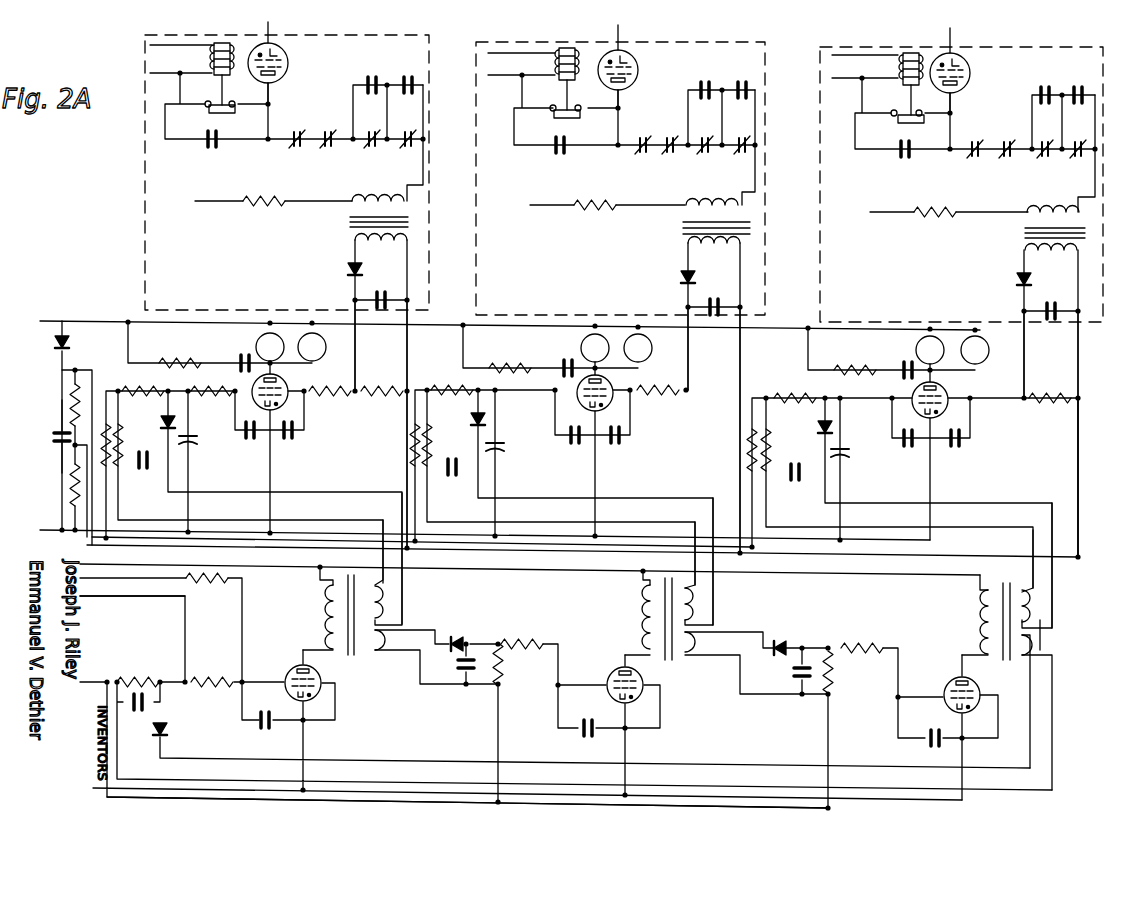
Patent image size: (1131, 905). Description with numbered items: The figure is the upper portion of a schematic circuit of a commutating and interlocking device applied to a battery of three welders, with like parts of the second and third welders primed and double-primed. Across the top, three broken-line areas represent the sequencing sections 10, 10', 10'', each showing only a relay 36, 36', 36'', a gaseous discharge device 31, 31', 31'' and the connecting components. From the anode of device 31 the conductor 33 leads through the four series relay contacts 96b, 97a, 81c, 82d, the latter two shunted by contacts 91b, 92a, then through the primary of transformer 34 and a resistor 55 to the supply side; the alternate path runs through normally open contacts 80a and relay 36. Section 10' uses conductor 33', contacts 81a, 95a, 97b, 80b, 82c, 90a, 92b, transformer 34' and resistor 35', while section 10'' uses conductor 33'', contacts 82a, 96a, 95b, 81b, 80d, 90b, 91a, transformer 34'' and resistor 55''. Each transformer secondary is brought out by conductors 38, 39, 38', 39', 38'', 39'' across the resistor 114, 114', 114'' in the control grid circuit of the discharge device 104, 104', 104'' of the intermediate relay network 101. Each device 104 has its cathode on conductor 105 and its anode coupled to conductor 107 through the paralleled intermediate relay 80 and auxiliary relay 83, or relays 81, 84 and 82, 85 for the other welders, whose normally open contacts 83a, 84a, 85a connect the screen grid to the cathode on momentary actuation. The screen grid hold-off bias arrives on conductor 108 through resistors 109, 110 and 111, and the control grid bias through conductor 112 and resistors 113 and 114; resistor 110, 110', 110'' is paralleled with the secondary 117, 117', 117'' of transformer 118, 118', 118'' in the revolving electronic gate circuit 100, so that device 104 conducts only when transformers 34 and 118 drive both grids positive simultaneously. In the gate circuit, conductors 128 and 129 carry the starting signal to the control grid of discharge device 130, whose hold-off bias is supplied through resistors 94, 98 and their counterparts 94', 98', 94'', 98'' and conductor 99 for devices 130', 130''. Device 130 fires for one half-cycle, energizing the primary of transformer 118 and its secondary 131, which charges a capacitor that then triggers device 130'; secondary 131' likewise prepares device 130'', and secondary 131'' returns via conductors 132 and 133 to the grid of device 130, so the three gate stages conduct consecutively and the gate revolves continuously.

The sequencing section 10 is at (268, 172).
The sequencing section 10' is at (602, 178).
The sequencing section 10'' is at (943, 184).
The gaseous discharge device 31 is at (283, 63).
The gaseous discharge device 31' is at (635, 70).
The gaseous discharge device 31'' is at (971, 72).
The conductor 33 is at (286, 94).
The conductor 33' is at (640, 99).
The conductor 33'' is at (972, 101).
The transformer 34 is at (356, 218).
The transformer 34' is at (695, 223).
The transformer 34'' is at (1030, 228).
The resistor 35' is at (607, 194).
The resistor 55 is at (273, 191).
The resistor 55'' is at (949, 200).
The relay 36 is at (200, 78).
The relay 36' is at (547, 83).
The relay 36'' is at (887, 88).
The conductor 38 is at (427, 424).
The conductor 38' is at (757, 430).
The conductor 38'' is at (1096, 434).
The conductor 39 is at (372, 345).
The conductor 39' is at (703, 348).
The conductor 39'' is at (1046, 354).
The intermediate relay 80 is at (270, 347).
The intermediate relay 81 is at (595, 348).
The intermediate relay 82 is at (930, 350).
The auxiliary relay 83 is at (312, 347).
The auxiliary relay 84 is at (638, 348).
The auxiliary relay 85 is at (975, 350).
The relay contacts 80a is at (203, 142).
The relay contacts 80b is at (704, 150).
The relay contacts 80d is at (1082, 154).
The relay contacts 81a is at (560, 149).
The relay contacts 81b is at (1044, 154).
The relay contacts 81c is at (368, 143).
The relay contacts 82a is at (905, 153).
The variable capacitor 82c is at (740, 150).
The relay contacts 82d is at (404, 143).
The relay contacts 83a is at (197, 440).
The relay contacts 84a is at (504, 447).
The relay contacts 85a is at (847, 452).
The relay contacts 90a is at (708, 87).
The relay contacts 90b is at (1081, 92).
The relay contacts 91a is at (1048, 92).
The relay contacts 91b is at (376, 82).
The relay contacts 92a is at (412, 82).
The relay contacts 92b is at (745, 87).
The relay contacts 95a is at (638, 150).
The relay contacts 95b is at (1006, 154).
The relay contacts 96a is at (970, 154).
The relay contacts 96b is at (292, 143).
The relay contacts 97a is at (328, 143).
The relay contacts 97b is at (670, 150).
The resistor 94 is at (142, 690).
The resistor 94' is at (518, 722).
The resistor 94'' is at (851, 729).
The resistor 98 is at (212, 666).
The resistor 98' is at (553, 650).
The resistor 98'' is at (892, 657).
The conductor 99 is at (380, 801).
The electronic gate circuit 100 is at (1070, 678).
The intermediate relay network 101 is at (1090, 439).
The discharge device 104 is at (290, 391).
The discharge device 104' is at (615, 392).
The discharge device 104'' is at (952, 398).
The conductor 105 is at (48, 530).
The conductor 107 is at (72, 308).
The conductor 108 is at (75, 370).
The resistor 109 is at (62, 430).
The resistor 110 is at (138, 427).
The resistor 110' is at (447, 430).
The resistor 110'' is at (789, 436).
The resistor 111 is at (210, 394).
The conductor 112 is at (62, 481).
The resistor 113 is at (328, 398).
The resistor 114 is at (382, 404).
The resistor 114' is at (677, 405).
The resistor 114'' is at (1045, 411).
The secondary 117 is at (408, 559).
The secondary 117' is at (720, 561).
The secondary 117'' is at (1063, 565).
The transformer 118 is at (318, 611).
The transformer 118' is at (635, 615).
The transformer 118'' is at (970, 617).
The conductor 128 is at (130, 580).
The conductor 129 is at (167, 596).
The discharge device 130 is at (286, 673).
The discharge device 130' is at (614, 675).
The discharge device 130'' is at (950, 679).
The secondary 131 is at (436, 646).
The secondary 131' is at (756, 652).
The secondary 131'' is at (1060, 632).
The conductor 132 is at (1030, 722).
The conductor 133 is at (1052, 758).